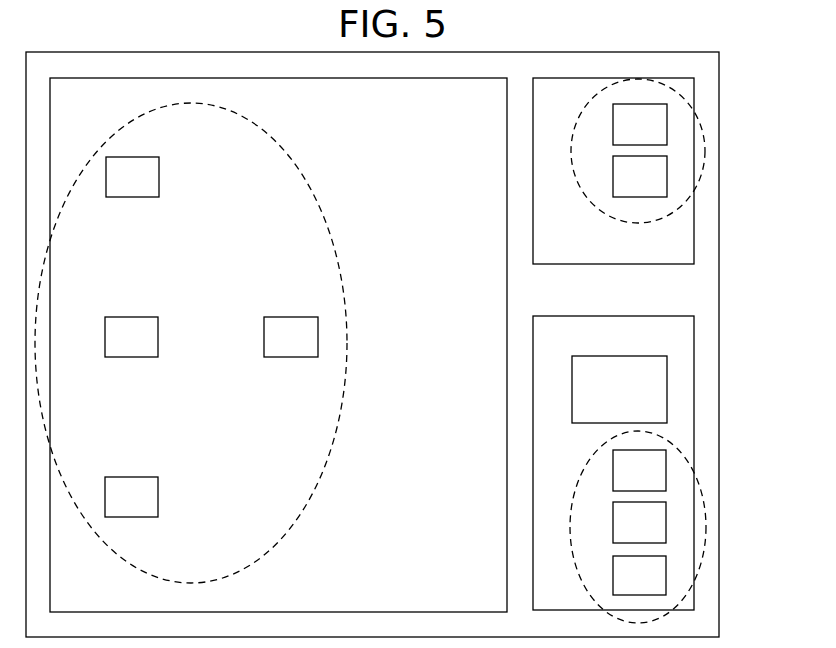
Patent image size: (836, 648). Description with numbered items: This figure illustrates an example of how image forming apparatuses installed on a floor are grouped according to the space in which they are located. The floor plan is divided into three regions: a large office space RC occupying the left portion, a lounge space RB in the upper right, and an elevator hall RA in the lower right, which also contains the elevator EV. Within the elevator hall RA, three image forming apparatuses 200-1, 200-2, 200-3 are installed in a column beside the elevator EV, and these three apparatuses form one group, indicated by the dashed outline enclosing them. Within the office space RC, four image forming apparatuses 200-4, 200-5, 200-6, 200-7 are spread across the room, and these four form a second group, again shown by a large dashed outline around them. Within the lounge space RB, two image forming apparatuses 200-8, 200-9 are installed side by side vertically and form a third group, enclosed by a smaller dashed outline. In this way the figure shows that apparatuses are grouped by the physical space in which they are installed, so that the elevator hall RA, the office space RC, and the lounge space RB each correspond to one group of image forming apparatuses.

The image forming apparatus 200-1 is at (666, 470).
The image forming apparatus 200-2 is at (666, 520).
The image forming apparatus 200-3 is at (666, 572).
The image forming apparatus 200-4 is at (159, 175).
The image forming apparatus 200-5 is at (132, 476).
The image forming apparatus 200-6 is at (290, 358).
The image forming apparatus 200-7 is at (133, 316).
The image forming apparatus 200-8 is at (667, 124).
The image forming apparatus 200-9 is at (667, 173).
The elevator hall RA is at (694, 350).
The lounge space RB is at (694, 238).
The office space RC is at (507, 296).
The electric vehicle EV is at (619, 389).